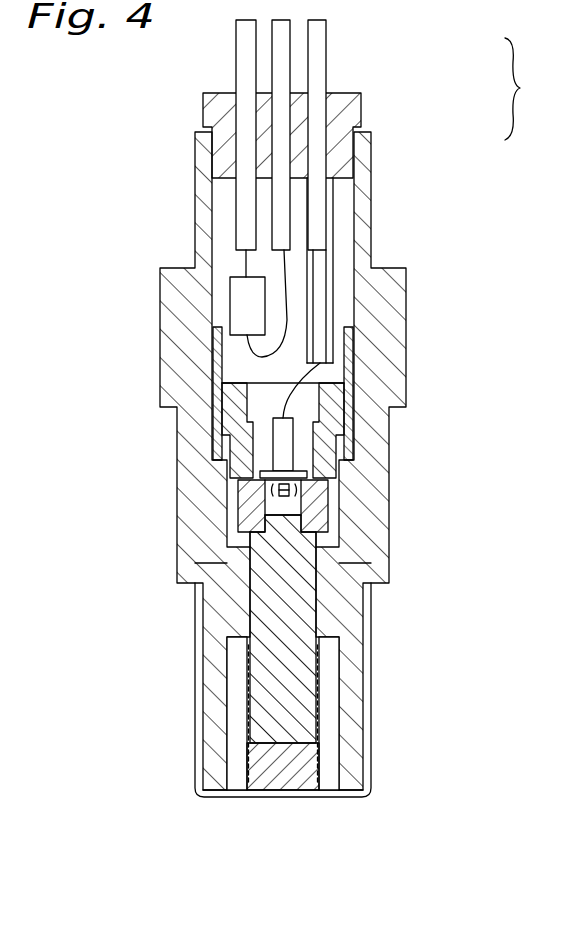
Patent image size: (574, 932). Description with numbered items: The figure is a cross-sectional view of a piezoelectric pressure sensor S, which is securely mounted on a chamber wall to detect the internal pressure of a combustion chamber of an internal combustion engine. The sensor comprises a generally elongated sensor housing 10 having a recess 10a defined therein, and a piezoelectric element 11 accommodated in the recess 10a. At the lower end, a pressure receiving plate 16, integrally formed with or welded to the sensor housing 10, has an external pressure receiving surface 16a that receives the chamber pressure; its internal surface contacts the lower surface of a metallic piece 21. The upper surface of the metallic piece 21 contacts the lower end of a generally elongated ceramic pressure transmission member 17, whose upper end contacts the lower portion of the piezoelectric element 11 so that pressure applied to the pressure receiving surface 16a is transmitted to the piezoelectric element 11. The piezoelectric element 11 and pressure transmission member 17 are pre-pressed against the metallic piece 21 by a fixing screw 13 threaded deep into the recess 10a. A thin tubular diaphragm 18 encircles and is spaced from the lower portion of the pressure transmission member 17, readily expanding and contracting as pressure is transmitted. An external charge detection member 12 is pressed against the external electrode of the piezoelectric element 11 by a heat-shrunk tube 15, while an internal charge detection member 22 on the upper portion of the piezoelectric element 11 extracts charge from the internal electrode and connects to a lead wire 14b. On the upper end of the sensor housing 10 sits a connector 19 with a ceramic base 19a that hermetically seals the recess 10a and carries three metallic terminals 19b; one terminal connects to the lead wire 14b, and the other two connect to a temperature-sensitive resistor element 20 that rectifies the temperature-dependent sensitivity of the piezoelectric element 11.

The piezoelectric pressure sensor S is at (157, 256).
The sensor housing 10 is at (172, 287).
The recess 10a is at (237, 363).
The piezoelectric element 11 is at (323, 528).
The external charge detection member 12 is at (328, 495).
The fixing screw 13 is at (337, 413).
The lead wire 14b is at (313, 272).
The heat-shrunk tube 15 is at (240, 494).
The pressure receiving plate 16 is at (291, 797).
The pressure receiving surface 16a is at (257, 795).
The pressure transmission member 17 is at (300, 622).
The tubular diaphragm 18 is at (320, 708).
The connector 19 is at (534, 89).
The ceramic base 19a is at (353, 107).
The metallic terminals 19b is at (318, 57).
The temperature-sensitive resistor element 20 is at (245, 302).
The metallic piece 21 is at (307, 778).
The internal charge detection member 22 is at (290, 397).